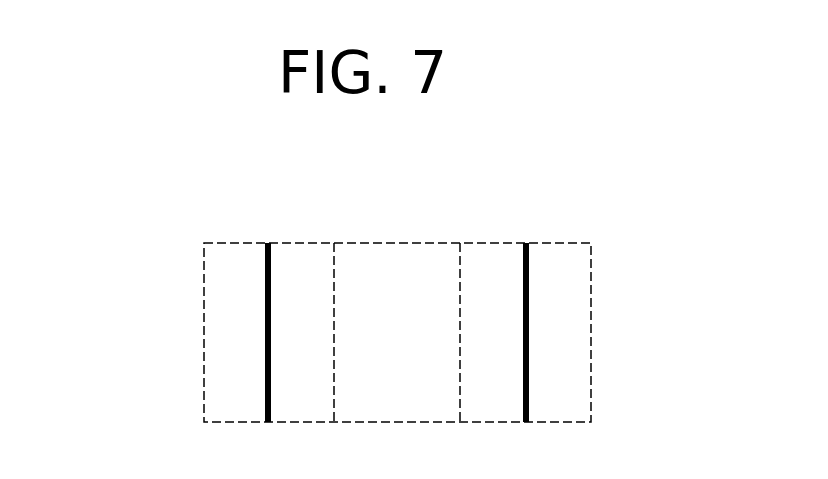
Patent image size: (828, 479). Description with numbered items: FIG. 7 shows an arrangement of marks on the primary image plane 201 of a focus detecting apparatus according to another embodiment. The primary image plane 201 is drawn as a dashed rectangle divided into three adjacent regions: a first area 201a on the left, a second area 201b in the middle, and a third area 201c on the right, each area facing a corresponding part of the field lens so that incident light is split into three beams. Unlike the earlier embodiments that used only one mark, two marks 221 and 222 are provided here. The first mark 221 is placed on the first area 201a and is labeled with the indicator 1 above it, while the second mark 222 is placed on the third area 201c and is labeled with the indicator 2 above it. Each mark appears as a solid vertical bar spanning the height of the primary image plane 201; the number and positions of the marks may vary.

The primary image plane 201 is at (400, 243).
The first area of the primary image plane 201a is at (307, 407).
The second area of the primary image plane 201b is at (395, 408).
The third area of the primary image plane 201c is at (492, 408).
The first mark 221 is at (265, 290).
The second mark 222 is at (529, 285).
The first position mark 1 is at (268, 211).
The second position mark 2 is at (527, 211).